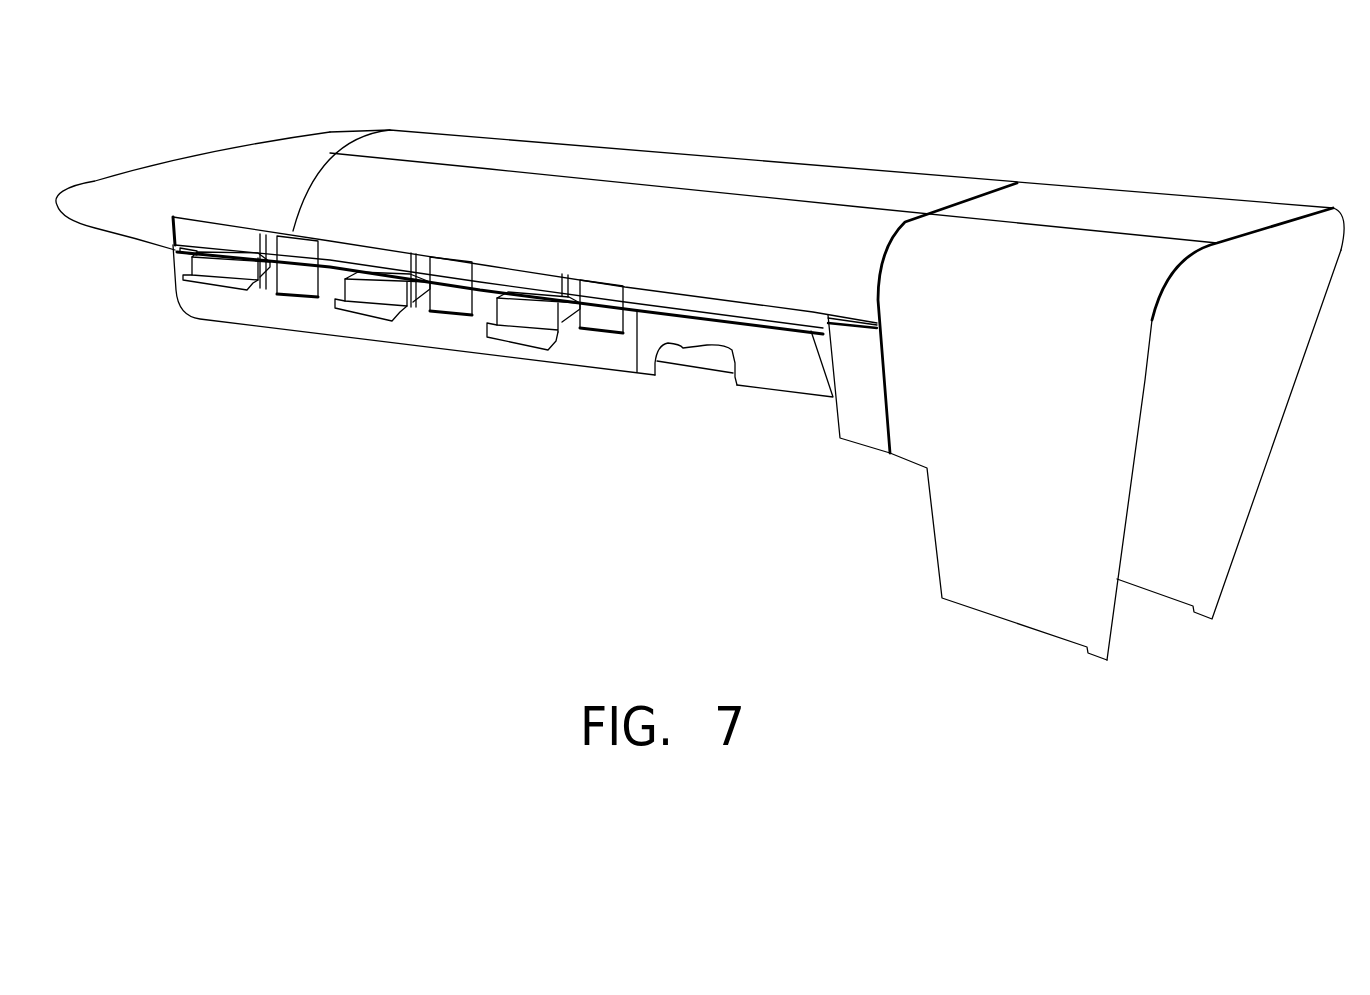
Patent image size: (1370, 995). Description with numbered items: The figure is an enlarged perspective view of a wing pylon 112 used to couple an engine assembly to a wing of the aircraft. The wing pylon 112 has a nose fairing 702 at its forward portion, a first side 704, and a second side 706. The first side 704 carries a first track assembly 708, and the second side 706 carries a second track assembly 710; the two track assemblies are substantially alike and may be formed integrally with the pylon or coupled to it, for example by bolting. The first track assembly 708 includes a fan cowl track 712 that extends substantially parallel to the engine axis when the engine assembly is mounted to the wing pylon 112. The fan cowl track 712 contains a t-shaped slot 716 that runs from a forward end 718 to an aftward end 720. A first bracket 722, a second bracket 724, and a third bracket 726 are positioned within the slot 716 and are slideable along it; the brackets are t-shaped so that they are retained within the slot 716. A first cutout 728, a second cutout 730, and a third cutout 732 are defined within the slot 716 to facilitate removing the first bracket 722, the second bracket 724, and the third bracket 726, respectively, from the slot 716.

The wing pylon 112 is at (997, 150).
The nose fairing 702 is at (80, 160).
The first side 704 is at (984, 585).
The second side 706 is at (1204, 538).
The first track assembly 708 is at (378, 362).
The second track assembly 710 is at (693, 360).
The fan cowl track 712 is at (725, 288).
The t-shaped slot 716 is at (637, 318).
The forward end 718 is at (178, 250).
The aftward end 720 is at (827, 327).
The first bracket 722 is at (221, 238).
The second bracket 724 is at (367, 260).
The third bracket 726 is at (527, 275).
The first cutout 728 is at (300, 248).
The second cutout 730 is at (452, 287).
The third cutout 732 is at (608, 298).